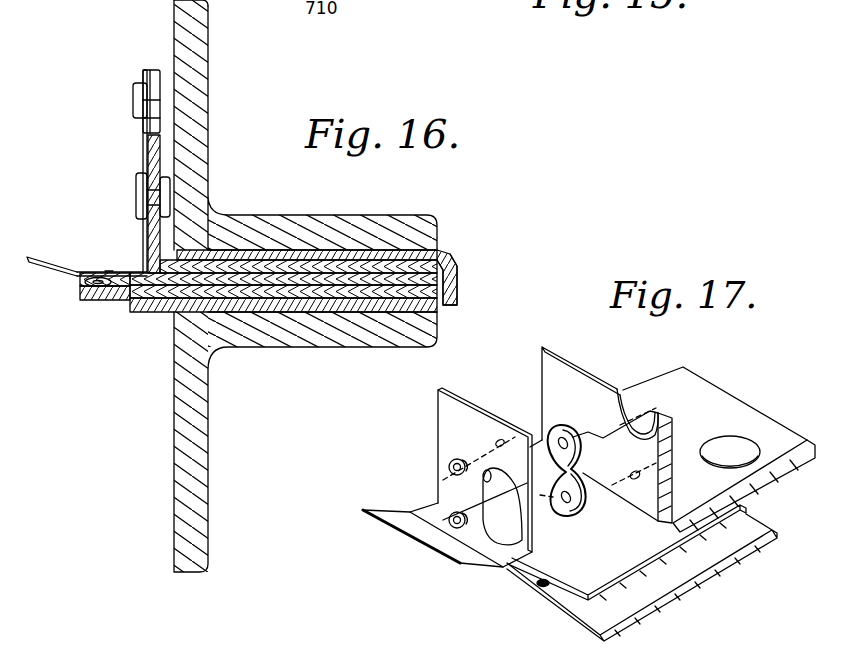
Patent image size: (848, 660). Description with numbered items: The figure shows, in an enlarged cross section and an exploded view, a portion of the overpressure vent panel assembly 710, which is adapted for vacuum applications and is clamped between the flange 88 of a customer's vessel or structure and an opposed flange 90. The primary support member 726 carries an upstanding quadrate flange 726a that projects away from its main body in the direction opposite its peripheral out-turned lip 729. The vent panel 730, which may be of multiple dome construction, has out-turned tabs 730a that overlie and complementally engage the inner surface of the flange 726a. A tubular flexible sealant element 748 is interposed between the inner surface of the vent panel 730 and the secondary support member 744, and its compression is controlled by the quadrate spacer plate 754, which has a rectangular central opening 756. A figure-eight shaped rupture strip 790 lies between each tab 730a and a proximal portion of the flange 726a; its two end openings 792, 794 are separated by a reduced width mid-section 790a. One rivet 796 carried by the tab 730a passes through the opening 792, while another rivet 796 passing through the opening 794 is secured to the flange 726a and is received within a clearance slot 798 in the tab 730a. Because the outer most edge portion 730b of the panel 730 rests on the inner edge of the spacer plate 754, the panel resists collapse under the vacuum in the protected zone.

In FIG. 16, the flange 88 is at (317, 348).
In FIG. 16, the opposed flange 90 is at (298, 222).
In FIG. 16, the overpressure vent panel assembly 710 is at (456, 259).
In FIG. 16, the primary support member 726 is at (393, 257).
In FIG. 17, the primary support member 726 is at (708, 398).
In FIG. 16, the upstanding quadrate flange 726a is at (160, 150).
In FIG. 17, the upstanding quadrate flange 726a is at (553, 374).
In FIG. 16, the peripheral out-turned lip 729 is at (460, 297).
In FIG. 17, the peripheral out-turned lip 729 is at (807, 457).
In FIG. 16, the vent panel 730 is at (41, 258).
In FIG. 17, the vent panel 730 is at (428, 495).
In FIG. 16, the out-turned tabs 730a is at (143, 127).
In FIG. 17, the out-turned tabs 730a is at (445, 418).
In FIG. 16, the outer most edge portion 730b is at (88, 271).
In FIG. 17, the outer most edge portion 730b is at (500, 578).
In FIG. 16, the secondary support member 744 is at (98, 300).
In FIG. 17, the secondary support member 744 is at (620, 608).
In FIG. 16, the tubular flexible sealant element 748 is at (85, 280).
In FIG. 17, the tubular flexible sealant element 748 is at (522, 576).
In FIG. 16, the quadrate spacer plate 754 is at (150, 300).
In FIG. 17, the quadrate spacer plate 754 is at (670, 541).
In FIG. 16, the rectangular central opening 756 is at (108, 270).
In FIG. 16, the rupture strip 790 is at (147, 151).
In FIG. 17, the rupture strip 790 is at (588, 508).
In FIG. 17, the reduced width mid-section 790a is at (581, 466).
In FIG. 17, the opening 792 is at (572, 430).
In FIG. 17, the opening 794 is at (567, 511).
In FIG. 16, the rivet 796 is at (133, 86).
In FIG. 17, the rivet 796 is at (450, 463).
In FIG. 17, the clearance slot 798 is at (480, 493).